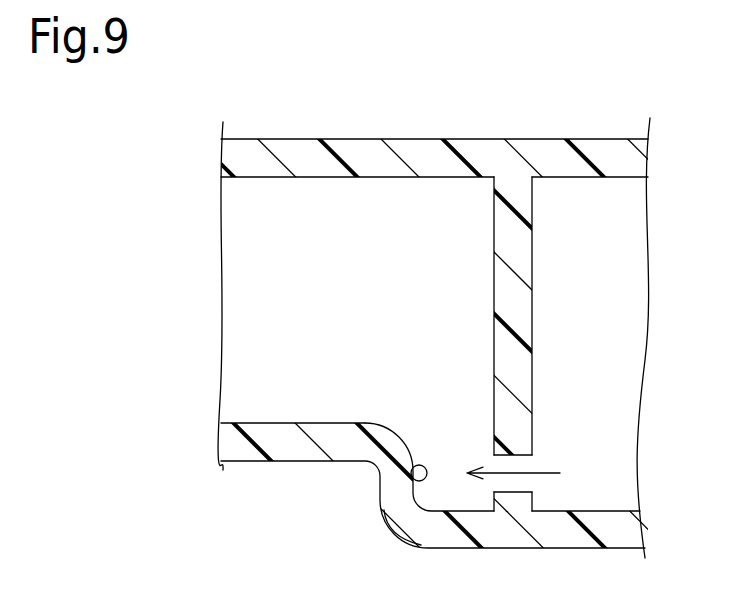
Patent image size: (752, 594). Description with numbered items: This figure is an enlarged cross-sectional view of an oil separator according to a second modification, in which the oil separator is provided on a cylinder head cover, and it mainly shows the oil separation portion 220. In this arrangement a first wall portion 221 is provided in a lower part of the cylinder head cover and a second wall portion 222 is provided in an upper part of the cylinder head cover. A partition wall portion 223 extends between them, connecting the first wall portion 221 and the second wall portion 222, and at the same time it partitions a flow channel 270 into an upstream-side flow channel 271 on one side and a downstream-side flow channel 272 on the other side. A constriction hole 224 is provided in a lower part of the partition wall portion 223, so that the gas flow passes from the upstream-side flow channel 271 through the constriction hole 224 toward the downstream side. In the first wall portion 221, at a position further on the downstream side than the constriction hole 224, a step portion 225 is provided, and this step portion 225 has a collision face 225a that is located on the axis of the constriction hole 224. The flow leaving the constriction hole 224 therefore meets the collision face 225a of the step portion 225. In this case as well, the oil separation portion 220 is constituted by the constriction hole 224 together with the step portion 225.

The oil separation portion 220 is at (488, 372).
The first wall portion 221 is at (242, 462).
The second wall portion 222 is at (293, 139).
The partition wall portion 223 is at (532, 312).
The constriction hole 224 is at (493, 457).
The step portion 225 is at (430, 486).
The collision face 225a is at (411, 469).
The flow channel 270 is at (450, 196).
The upstream-side flow channel 271 is at (619, 226).
The downstream-side flow channel 272 is at (244, 244).